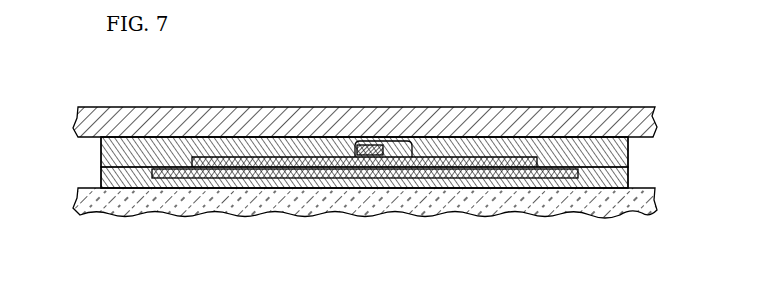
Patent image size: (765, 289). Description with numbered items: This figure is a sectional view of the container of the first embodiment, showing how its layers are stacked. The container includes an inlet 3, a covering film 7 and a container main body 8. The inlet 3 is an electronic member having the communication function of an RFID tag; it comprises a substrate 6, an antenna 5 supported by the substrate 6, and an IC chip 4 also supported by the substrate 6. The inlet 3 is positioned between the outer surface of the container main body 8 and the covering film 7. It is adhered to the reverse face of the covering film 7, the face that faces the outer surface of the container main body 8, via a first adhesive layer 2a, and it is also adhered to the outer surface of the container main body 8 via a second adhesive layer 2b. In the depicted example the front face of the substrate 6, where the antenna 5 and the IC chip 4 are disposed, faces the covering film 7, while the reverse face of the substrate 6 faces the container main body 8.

The first adhesive layer 2a is at (628, 155).
The second adhesive layer 2b is at (628, 173).
The inlet 3 is at (65, 137).
The IC chip 4 is at (371, 144).
The antenna 5 is at (408, 158).
The substrate 6 is at (418, 179).
The covering film 7 is at (619, 107).
The container main body 8 is at (627, 219).